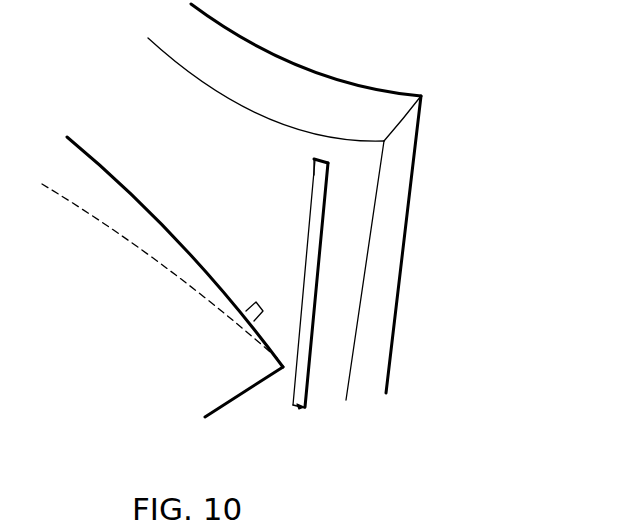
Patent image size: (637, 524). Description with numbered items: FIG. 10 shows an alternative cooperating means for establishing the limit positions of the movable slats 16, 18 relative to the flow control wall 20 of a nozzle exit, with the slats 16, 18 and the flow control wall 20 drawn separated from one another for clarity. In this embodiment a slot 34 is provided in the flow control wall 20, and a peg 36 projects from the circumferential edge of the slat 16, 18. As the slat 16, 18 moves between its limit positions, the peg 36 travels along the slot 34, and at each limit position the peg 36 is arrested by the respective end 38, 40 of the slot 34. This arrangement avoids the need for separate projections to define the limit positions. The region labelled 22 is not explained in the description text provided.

The slat 16 is at (239, 414).
The slat 18 is at (209, 394).
The flow control wall 20 is at (387, 287).
The panel 22 is at (248, 184).
The slot 34 is at (315, 227).
The peg 36 is at (257, 303).
The end of the slot 38 is at (298, 410).
The end of the slot 40 is at (316, 158).